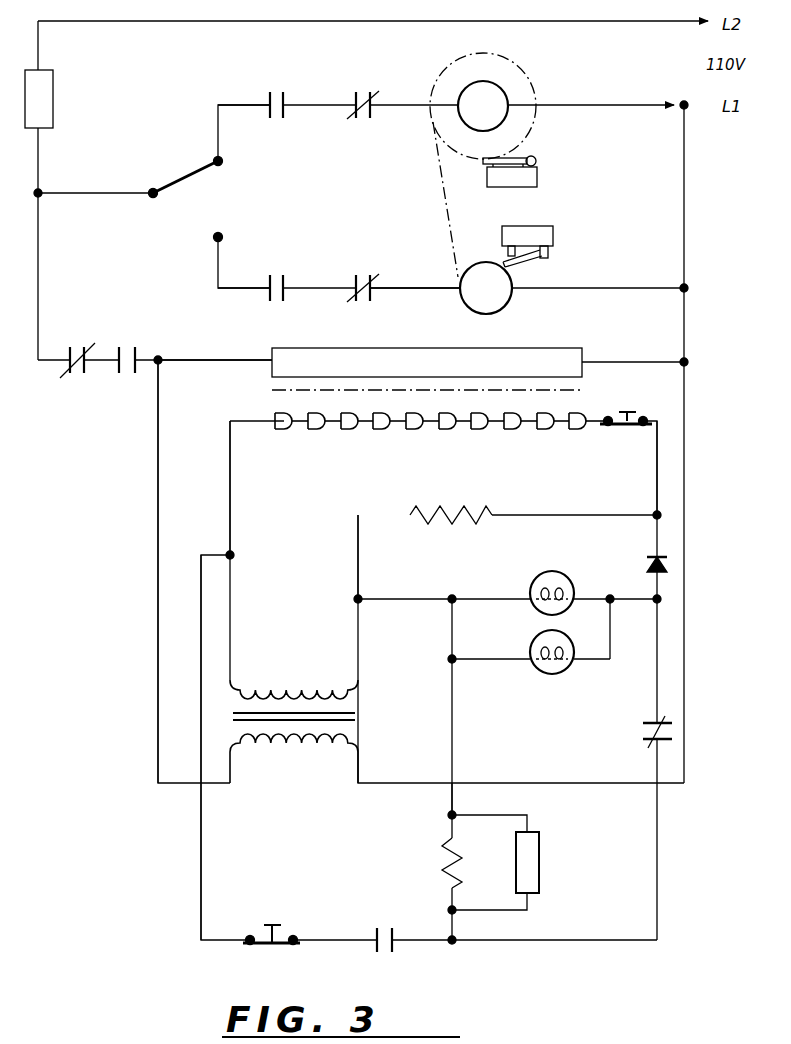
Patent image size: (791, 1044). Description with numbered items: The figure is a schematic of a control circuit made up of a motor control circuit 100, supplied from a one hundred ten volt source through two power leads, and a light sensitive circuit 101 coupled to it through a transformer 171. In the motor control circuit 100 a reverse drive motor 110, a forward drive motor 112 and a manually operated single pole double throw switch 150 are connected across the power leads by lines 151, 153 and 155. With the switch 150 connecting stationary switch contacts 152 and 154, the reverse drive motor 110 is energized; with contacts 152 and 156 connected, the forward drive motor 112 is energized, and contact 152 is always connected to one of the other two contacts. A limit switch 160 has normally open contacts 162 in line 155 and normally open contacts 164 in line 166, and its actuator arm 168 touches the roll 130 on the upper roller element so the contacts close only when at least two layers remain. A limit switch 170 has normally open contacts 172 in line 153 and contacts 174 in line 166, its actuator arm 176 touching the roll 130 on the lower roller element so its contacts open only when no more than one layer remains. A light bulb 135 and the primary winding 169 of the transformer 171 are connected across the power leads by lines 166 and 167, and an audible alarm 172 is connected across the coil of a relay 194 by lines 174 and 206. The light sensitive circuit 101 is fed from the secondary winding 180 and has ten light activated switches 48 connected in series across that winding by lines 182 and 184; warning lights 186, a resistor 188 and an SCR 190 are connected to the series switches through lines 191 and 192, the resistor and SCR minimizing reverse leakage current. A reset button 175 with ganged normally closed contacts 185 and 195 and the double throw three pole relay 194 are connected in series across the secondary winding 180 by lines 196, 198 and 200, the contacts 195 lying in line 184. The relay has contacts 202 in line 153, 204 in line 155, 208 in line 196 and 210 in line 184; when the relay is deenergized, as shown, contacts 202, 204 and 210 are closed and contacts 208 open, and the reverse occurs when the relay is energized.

The light activated switches 48 is at (290, 432).
The motor control circuit 100 is at (408, 326).
The light sensitive circuit 101 is at (306, 608).
The reverse drive motor 110 is at (500, 82).
The forward drive motor 112 is at (486, 262).
The roll 130 is at (528, 72).
The light bulb 135 is at (570, 347).
The single pole double throw switch 150 is at (176, 178).
The line 151 is at (90, 192).
The stationary switch contact 152 is at (152, 199).
The line 153 is at (236, 104).
The stationary switch contact 154 is at (215, 158).
The line 155 is at (237, 289).
The stationary switch contact 156 is at (214, 240).
The limit switch 160 is at (538, 178).
The normally open contacts 162 is at (277, 274).
The normally open contacts 164 is at (72, 380).
The line 166 is at (202, 363).
The line 167 is at (157, 578).
The actuator arm 168 is at (521, 160).
The primary winding 169 is at (298, 736).
The limit switch 170 is at (553, 234).
The transformer 171 is at (357, 718).
The normally open contacts / audible alarm 172 is at (277, 92).
The normally open contacts / line 174 is at (127, 376).
The reset button 175 is at (277, 922).
The actuator arm 176 is at (513, 259).
The secondary winding 180 is at (300, 690).
The line 182 is at (228, 490).
The line 184 is at (655, 466).
The normally closed contacts 185 is at (272, 948).
The warning lights 186 is at (536, 642).
The resistor 188 is at (465, 511).
The SCR 190 is at (647, 562).
The line 191 is at (545, 514).
The line 192 is at (487, 598).
The relay 194 is at (445, 863).
The normally closed contacts 195 is at (637, 417).
The line 196 is at (199, 818).
The line 198 is at (449, 798).
The line 200 is at (407, 602).
The relay contact 202 is at (361, 92).
The relay contact 204 is at (363, 274).
The line 206 is at (456, 896).
The relay contacts 208 is at (383, 926).
The relay contacts 210 is at (641, 736).